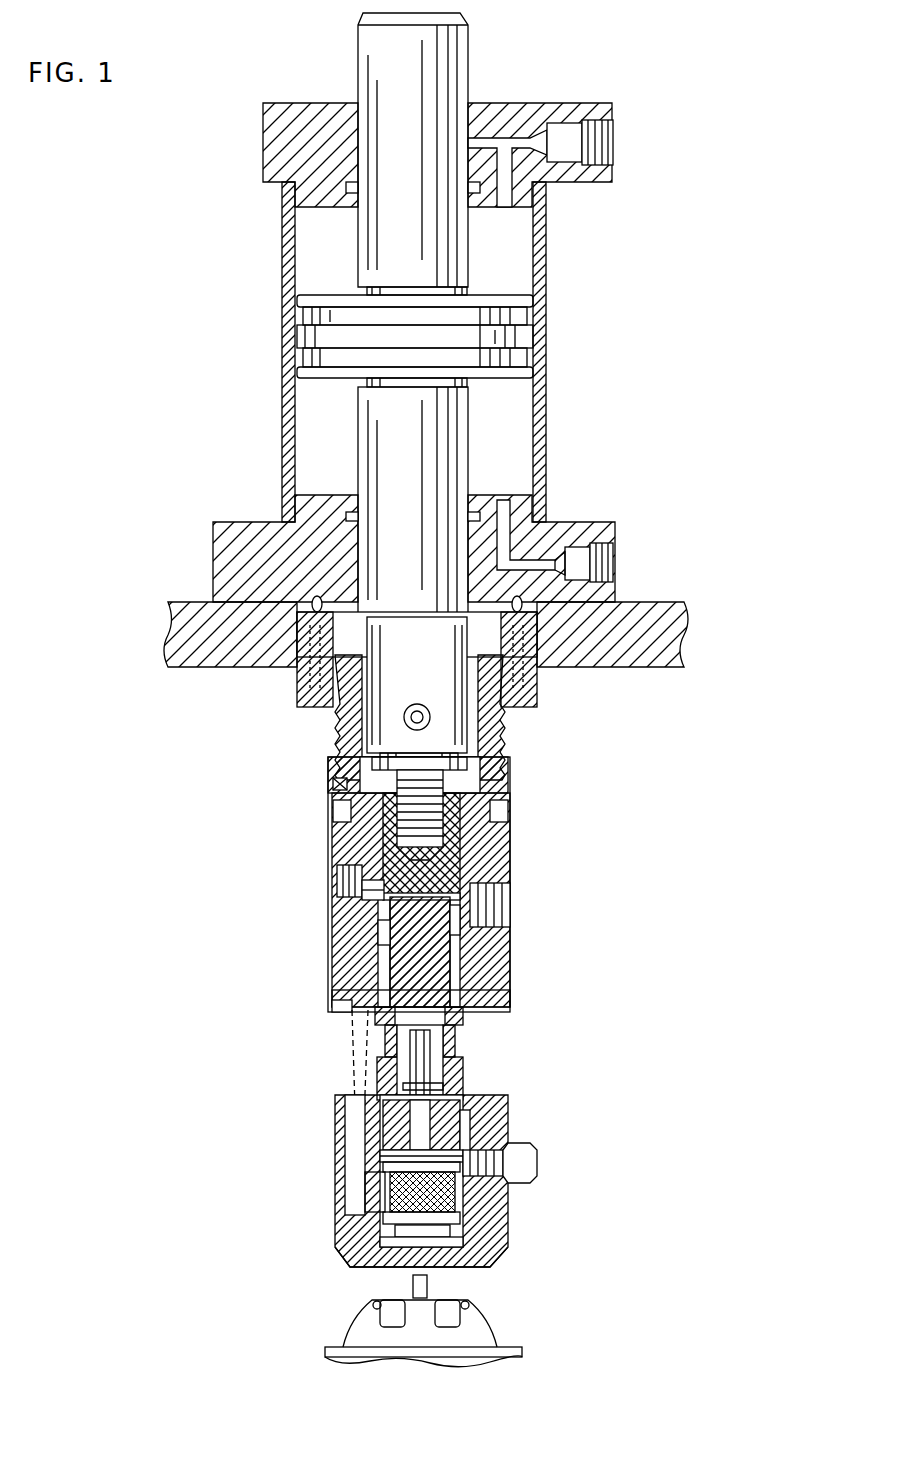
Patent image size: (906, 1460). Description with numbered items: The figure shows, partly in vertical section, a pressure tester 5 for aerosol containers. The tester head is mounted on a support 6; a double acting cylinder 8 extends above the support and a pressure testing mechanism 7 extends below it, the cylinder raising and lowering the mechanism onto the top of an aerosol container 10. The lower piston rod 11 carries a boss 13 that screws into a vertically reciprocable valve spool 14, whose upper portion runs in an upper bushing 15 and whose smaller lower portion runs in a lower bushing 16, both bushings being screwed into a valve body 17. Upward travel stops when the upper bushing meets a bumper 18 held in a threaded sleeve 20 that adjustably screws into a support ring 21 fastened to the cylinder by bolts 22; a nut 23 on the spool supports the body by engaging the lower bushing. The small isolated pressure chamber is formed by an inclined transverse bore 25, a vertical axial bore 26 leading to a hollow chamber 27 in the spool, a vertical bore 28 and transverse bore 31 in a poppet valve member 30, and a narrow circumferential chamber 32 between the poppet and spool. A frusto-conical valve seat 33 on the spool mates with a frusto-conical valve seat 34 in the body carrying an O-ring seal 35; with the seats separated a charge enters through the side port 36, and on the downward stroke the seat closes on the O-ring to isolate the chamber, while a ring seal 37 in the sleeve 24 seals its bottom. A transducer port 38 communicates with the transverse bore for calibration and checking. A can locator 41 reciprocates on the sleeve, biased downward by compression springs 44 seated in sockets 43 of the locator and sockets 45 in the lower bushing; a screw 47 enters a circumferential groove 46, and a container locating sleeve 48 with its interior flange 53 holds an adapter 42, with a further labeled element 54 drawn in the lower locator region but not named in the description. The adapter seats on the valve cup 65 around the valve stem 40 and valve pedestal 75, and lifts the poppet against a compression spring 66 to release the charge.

The pressure tester 5 is at (652, 729).
The support 6 is at (648, 602).
The pressure testing mechanism 7 is at (226, 944).
The double acting cylinder 8 is at (638, 360).
The aerosol container 10 is at (530, 1328).
The lower piston rod 11 is at (468, 462).
The boss 13 is at (470, 790).
The valve spool 14 is at (435, 862).
The upper bushing 15 is at (492, 805).
The lower bushing 16 is at (510, 992).
The valve body 17 is at (510, 864).
The bumper 18 is at (333, 785).
The threaded sleeve 20 is at (348, 726).
The support ring 21 is at (297, 685).
The bolts 22 is at (313, 700).
The nut 23 is at (462, 1018).
The sleeve 24 is at (455, 1072).
The inclined transverse bore 25 is at (400, 918).
The vertical axial bore 26 is at (395, 937).
The hollow chamber 27 is at (400, 1063).
The vertical bore 28 is at (450, 1088).
The poppet valve member 30 is at (430, 1122).
The transverse bore 31 is at (470, 1187).
The circumferential chamber 32 is at (400, 1142).
The frusto-conical valve seat 33 is at (385, 900).
The frusto-conical valve seat 34 is at (455, 896).
The O-ring seal 35 is at (485, 940).
The side port 36 is at (337, 878).
The ring seal 37 is at (380, 1166).
The transducer port 38 is at (510, 907).
The valve stem 40 is at (430, 1292).
The can locator 41 is at (500, 1216).
The adapter 42 is at (490, 1202).
The sockets 43 is at (345, 1112).
The compression springs 44 is at (345, 1035).
The sockets 45 is at (340, 1006).
The circumferential groove 46 is at (462, 1137).
The screw 47 is at (537, 1165).
The container locating sleeve 48 is at (375, 1195).
The flange 53 is at (500, 1247).
The passage 54 is at (385, 1180).
The valve cup 65 is at (466, 1303).
The compression spring 66 is at (445, 1036).
The valve pedestal 75 is at (375, 1300).